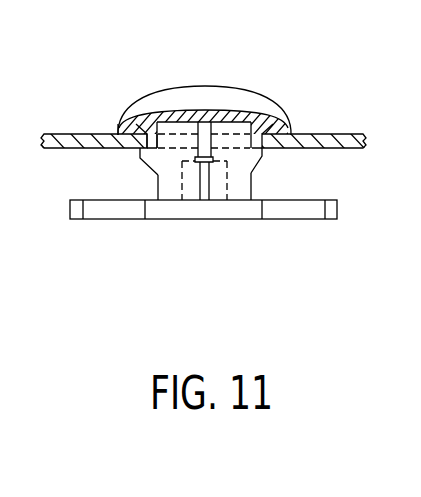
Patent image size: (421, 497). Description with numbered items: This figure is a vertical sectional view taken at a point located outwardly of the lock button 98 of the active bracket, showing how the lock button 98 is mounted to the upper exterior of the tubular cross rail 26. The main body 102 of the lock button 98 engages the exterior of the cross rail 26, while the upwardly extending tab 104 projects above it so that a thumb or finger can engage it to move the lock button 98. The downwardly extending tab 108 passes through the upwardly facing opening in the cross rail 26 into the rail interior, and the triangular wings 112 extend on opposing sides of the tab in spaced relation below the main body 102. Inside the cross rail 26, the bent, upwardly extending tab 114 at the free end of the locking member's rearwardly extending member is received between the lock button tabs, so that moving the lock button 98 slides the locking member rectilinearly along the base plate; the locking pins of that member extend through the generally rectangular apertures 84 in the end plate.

The tubular cross rail 26 is at (343, 133).
The generally rectangular apertures 84 is at (278, 210).
The lock button 98 is at (132, 118).
The main body 102 is at (258, 115).
The upwardly extending tab 104 is at (212, 97).
The downwardly extending tab 108 is at (243, 182).
The triangular wings 112 is at (140, 158).
The upwardly extending tab 114 is at (183, 200).